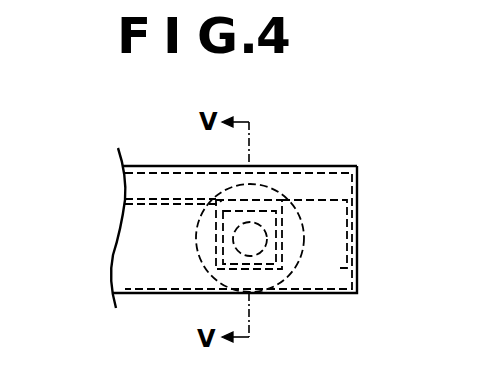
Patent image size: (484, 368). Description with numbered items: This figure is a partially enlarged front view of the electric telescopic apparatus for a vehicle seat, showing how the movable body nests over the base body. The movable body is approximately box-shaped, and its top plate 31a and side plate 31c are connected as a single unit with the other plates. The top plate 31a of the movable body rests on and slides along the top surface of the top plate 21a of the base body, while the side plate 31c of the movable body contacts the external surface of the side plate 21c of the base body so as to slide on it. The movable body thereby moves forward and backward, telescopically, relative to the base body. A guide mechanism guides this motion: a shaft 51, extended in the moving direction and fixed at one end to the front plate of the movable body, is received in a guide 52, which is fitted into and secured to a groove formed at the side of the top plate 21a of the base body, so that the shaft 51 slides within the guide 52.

The top plate of base body 21a is at (150, 206).
The side plate of base body 21c is at (348, 250).
The top plate of movable body 31a is at (282, 165).
The side plate of movable body 31c is at (352, 222).
The shaft 51 is at (261, 249).
The guide 52 is at (268, 251).